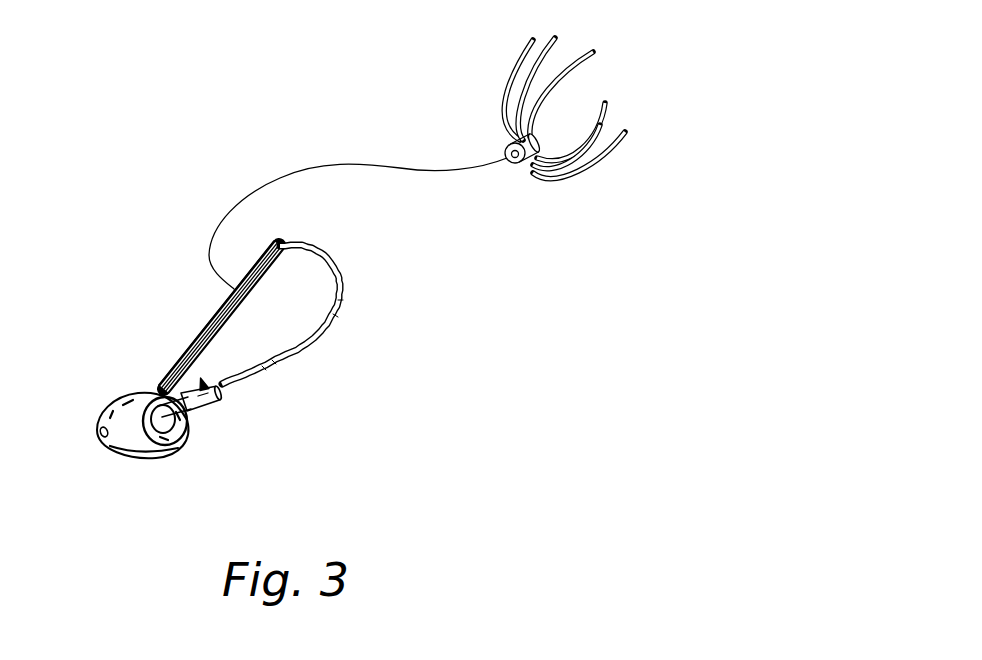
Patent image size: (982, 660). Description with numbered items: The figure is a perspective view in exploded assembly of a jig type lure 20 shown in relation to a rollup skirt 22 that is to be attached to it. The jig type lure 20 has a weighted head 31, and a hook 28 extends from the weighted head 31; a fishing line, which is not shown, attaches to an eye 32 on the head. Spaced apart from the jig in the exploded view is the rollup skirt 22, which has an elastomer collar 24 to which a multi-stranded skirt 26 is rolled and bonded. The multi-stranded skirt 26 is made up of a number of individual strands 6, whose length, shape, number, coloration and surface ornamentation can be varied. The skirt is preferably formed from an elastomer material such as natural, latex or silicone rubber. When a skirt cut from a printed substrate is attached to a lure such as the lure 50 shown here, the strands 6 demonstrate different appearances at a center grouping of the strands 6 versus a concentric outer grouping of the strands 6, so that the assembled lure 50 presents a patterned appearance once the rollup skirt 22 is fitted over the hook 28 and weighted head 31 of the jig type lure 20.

The lure 50 is at (175, 266).
The hook 28 is at (336, 311).
The jig type lure 20 is at (97, 418).
The weighted head 31 is at (122, 462).
The eye 32 is at (98, 437).
The rollup skirt 22 is at (562, 188).
The strands 6 is at (556, 37).
The multi-stranded skirt 26 is at (518, 68).
The elastomer collar 24 is at (511, 142).